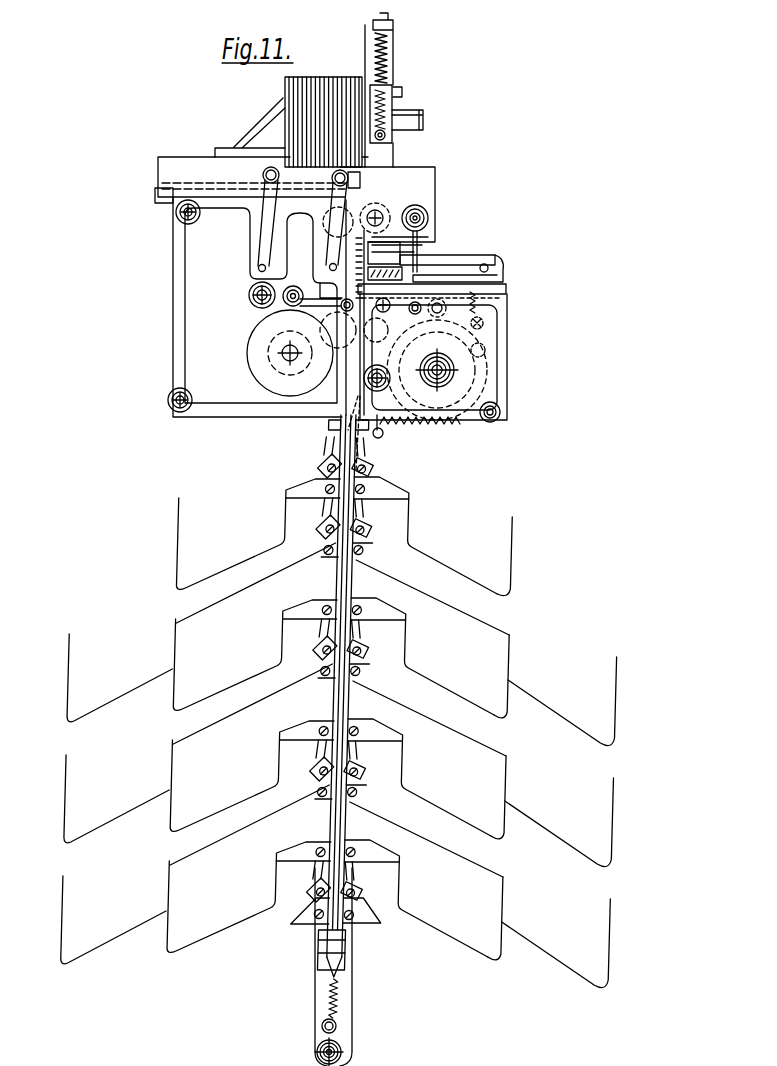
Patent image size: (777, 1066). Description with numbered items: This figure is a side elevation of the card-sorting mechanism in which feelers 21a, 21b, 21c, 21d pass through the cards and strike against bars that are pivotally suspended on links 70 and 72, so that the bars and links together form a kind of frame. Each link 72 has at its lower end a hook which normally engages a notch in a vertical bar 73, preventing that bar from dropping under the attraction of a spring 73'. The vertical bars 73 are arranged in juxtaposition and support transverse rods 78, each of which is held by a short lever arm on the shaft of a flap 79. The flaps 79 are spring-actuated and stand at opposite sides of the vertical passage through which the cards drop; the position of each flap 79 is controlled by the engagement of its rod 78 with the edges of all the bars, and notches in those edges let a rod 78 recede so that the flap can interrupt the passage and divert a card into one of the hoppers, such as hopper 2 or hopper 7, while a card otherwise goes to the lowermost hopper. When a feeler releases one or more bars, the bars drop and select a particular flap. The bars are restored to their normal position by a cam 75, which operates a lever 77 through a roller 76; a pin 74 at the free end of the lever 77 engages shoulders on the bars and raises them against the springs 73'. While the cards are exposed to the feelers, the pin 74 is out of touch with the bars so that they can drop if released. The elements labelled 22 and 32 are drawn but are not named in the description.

The link 70 is at (268, 207).
The link 72 is at (323, 238).
The lever 77 is at (313, 298).
The roller 76 is at (287, 297).
The cam 75 is at (258, 365).
The pin 74 is at (362, 300).
The bar 22 is at (447, 257).
The feeler 21a is at (427, 220).
The feeler 21b is at (420, 237).
The feeler 21c is at (410, 247).
The feeler 21d is at (403, 257).
The gear wheel 32 is at (380, 343).
The hopper 2 is at (437, 316).
The hopper 7 is at (356, 567).
The transverse rod 78 is at (368, 525).
The flap 79 is at (363, 653).
The vertical bar 73 is at (291, 932).
The spring 73' is at (304, 1022).